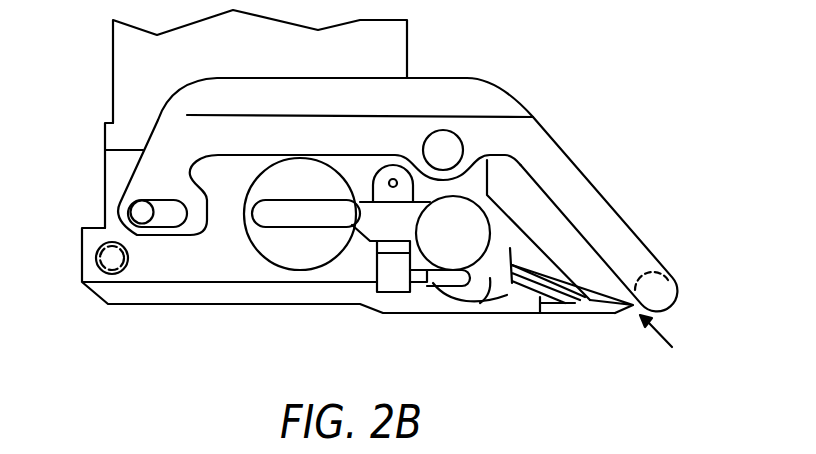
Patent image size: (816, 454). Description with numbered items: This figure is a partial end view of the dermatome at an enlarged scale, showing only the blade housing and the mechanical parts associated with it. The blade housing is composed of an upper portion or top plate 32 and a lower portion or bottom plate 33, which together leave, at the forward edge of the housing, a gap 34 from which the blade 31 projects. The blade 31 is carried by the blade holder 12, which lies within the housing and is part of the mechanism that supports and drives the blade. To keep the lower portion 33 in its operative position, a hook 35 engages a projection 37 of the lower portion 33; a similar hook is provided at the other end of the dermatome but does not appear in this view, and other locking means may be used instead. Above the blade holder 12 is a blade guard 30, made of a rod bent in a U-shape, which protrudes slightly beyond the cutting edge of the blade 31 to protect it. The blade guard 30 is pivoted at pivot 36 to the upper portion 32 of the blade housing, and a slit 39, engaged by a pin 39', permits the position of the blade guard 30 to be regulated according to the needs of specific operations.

The blade holder 12 is at (540, 313).
The blade guard 30 is at (615, 248).
The blade 31 is at (675, 345).
The upper portion or top plate 32 is at (455, 82).
The lower portion or bottom plate 33 is at (267, 293).
The gap 34 is at (600, 280).
The hook 35 is at (481, 294).
The pivot 36 is at (457, 147).
The projection 37 is at (429, 284).
The slit 39 is at (157, 273).
The pin 39' is at (100, 191).